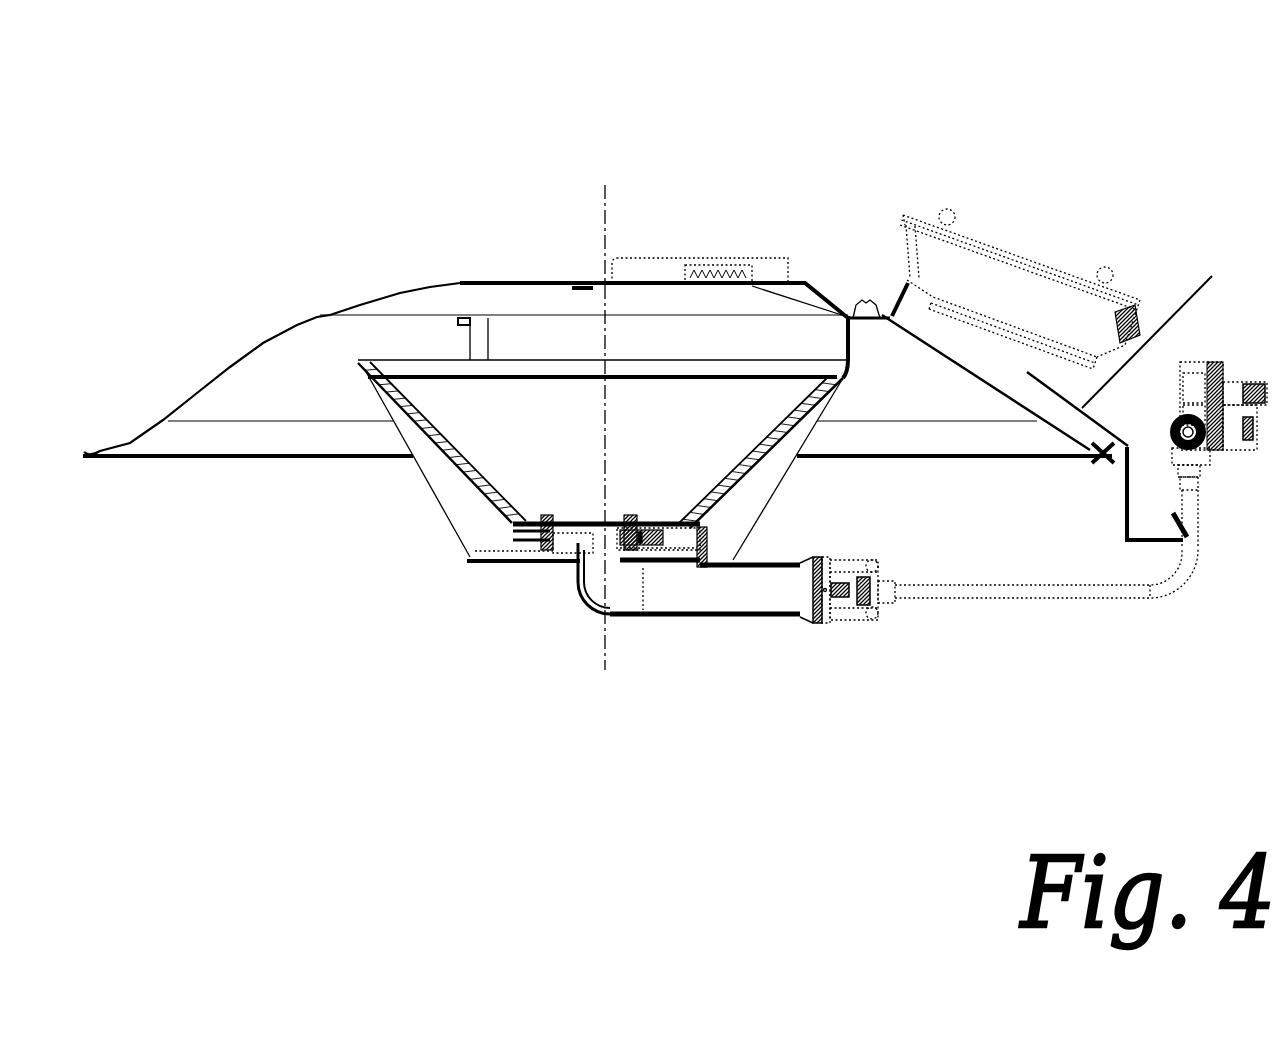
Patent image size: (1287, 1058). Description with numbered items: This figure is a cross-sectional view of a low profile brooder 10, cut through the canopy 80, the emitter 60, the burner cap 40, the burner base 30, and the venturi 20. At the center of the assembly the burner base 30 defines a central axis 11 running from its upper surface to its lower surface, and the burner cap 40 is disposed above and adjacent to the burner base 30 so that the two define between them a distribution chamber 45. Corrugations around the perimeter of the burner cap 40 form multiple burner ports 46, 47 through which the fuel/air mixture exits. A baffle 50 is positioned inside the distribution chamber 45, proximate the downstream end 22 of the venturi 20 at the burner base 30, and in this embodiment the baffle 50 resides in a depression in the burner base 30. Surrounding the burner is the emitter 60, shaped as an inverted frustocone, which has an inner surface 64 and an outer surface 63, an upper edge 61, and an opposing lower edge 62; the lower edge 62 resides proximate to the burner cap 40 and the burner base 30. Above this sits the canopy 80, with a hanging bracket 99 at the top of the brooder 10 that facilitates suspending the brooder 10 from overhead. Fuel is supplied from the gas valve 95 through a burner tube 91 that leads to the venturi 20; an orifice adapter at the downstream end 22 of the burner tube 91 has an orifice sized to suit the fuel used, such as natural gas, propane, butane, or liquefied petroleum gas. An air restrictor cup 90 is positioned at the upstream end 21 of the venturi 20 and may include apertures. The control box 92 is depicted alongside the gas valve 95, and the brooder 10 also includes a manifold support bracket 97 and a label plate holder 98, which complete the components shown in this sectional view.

The brooder 10 is at (125, 84).
The central axis 11 is at (603, 237).
The venturi 20 is at (723, 595).
The upstream end 21 is at (832, 625).
The downstream end 22 is at (593, 540).
The burner base 30 is at (467, 561).
The burner cap 40 is at (573, 521).
The distribution chamber 45 is at (470, 523).
The burner port 46 is at (653, 527).
The burner port 47 is at (663, 527).
The baffle 50 is at (632, 515).
The emitter 60 is at (392, 424).
The upper edge 61 is at (388, 360).
The lower edge 62 is at (508, 563).
The outer surface 63 is at (423, 478).
The inner surface 64 is at (450, 438).
The canopy 80 is at (292, 348).
The air restrictor cup 90 is at (866, 620).
The burner tube 91 is at (1017, 593).
The control box 92 is at (982, 273).
The gas valve 95 is at (1219, 325).
The manifold support bracket 97 is at (1128, 540).
The label plate holder 98 is at (1210, 276).
The hanging bracket 99 is at (645, 270).